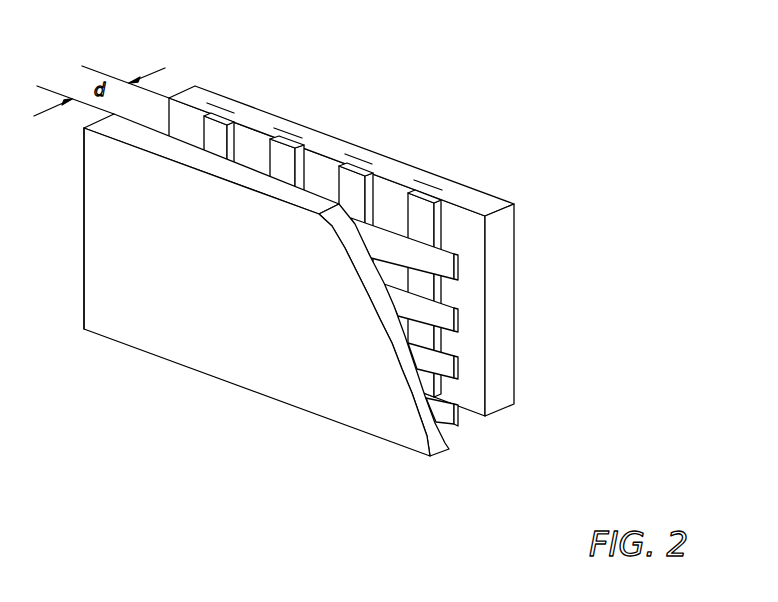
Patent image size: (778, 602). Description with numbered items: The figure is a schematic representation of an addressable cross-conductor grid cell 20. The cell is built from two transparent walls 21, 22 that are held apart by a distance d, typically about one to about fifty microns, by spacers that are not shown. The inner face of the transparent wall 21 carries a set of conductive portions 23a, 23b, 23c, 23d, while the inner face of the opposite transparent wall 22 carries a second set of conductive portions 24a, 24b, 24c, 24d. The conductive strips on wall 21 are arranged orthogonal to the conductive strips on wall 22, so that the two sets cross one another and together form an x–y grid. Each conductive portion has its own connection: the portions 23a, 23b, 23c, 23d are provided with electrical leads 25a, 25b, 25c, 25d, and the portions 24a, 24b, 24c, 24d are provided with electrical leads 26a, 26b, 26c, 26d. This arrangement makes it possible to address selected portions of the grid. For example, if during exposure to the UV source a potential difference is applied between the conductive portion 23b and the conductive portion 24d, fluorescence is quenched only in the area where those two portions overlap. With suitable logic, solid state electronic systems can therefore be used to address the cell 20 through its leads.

The addressable cross-conductor grid cell 20 is at (190, 283).
The transparent wall 21 is at (97, 231).
The transparent wall 22 is at (187, 86).
The conductive portion 23a is at (457, 249).
The conductive portion 23b is at (474, 308).
The conductive portion 23c is at (485, 362).
The conductive portion 23d is at (479, 442).
The conductive portion 24a is at (218, 127).
The conductive portion 24b is at (278, 150).
The conductive portion 24c is at (352, 182).
The conductive portion 24d is at (422, 205).
The electrical lead 25a is at (480, 278).
The electrical lead 25b is at (480, 330).
The electrical lead 25c is at (480, 378).
The electrical lead 25d is at (468, 424).
The electrical lead 26a is at (218, 72).
The electrical lead 26b is at (286, 95).
The electrical lead 26c is at (357, 123).
The electrical lead 26d is at (426, 148).